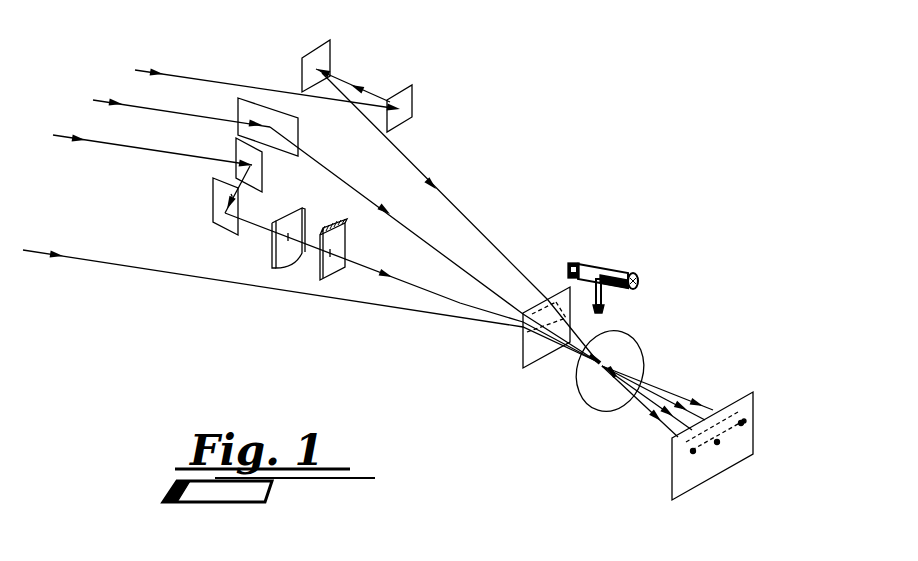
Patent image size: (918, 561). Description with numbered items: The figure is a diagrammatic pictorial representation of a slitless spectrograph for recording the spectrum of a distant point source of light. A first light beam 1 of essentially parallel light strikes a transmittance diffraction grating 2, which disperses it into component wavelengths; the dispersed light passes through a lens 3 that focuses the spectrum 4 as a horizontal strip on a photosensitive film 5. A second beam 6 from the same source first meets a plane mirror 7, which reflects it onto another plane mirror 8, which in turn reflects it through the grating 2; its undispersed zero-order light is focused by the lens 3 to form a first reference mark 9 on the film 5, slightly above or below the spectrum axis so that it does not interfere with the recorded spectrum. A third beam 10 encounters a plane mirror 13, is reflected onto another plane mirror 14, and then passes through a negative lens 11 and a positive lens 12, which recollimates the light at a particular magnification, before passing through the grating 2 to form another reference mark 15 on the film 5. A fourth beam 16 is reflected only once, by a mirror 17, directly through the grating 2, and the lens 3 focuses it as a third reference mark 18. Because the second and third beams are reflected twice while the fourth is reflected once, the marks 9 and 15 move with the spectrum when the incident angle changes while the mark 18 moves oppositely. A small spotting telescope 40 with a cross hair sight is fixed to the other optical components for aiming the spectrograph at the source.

The light beam 1 is at (76, 259).
The diffraction grating 2 is at (523, 350).
The lens 3 is at (630, 340).
The spectrum 4 is at (741, 423).
The photosensitive film 5 is at (746, 392).
The second beam 6 is at (192, 78).
The plane mirror 7 is at (413, 98).
The plane mirror 8 is at (332, 56).
The first reference mark 9 is at (693, 451).
The third beam 10 is at (100, 140).
The negative lens 11 is at (272, 253).
The positive lens 12 is at (337, 222).
The plane mirror 13 is at (237, 150).
The plane mirror 14 is at (213, 203).
The reference mark 15 is at (744, 421).
The fourth beam 16 is at (140, 105).
The mirror 17 is at (298, 133).
The third reference mark 18 is at (717, 442).
The spotting telescope 40 is at (613, 267).